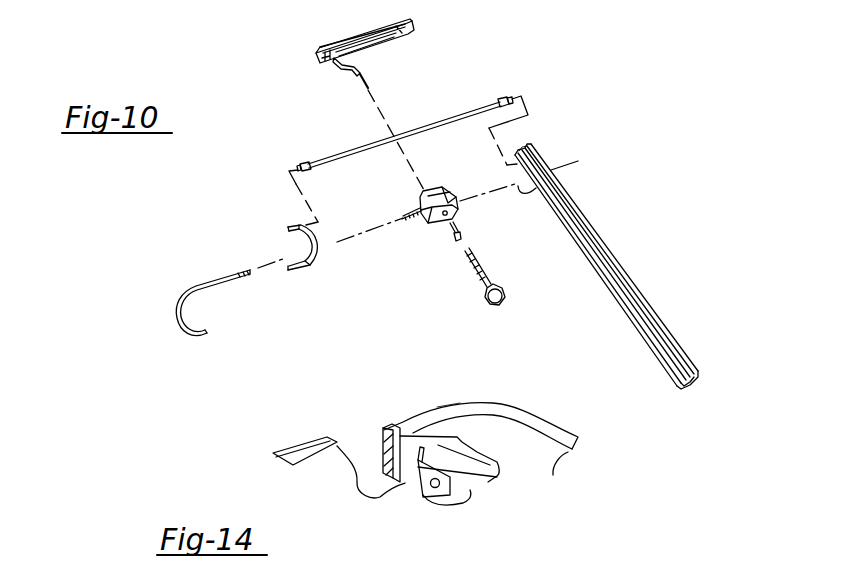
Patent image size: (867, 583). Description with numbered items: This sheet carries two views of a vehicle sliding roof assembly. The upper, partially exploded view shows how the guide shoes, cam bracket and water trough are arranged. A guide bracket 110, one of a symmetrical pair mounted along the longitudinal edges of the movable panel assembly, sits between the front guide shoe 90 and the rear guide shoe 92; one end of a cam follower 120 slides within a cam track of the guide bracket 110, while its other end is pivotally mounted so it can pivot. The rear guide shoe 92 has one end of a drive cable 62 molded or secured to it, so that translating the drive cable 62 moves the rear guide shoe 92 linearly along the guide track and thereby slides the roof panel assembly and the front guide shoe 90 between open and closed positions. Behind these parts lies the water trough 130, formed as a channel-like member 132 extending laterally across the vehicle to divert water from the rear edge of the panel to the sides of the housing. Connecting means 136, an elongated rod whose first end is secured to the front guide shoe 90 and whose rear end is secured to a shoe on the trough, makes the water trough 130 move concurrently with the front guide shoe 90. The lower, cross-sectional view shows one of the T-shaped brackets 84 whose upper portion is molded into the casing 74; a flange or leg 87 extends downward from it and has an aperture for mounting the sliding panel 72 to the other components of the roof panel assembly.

In FIG. 10, the guide bracket 110 is at (352, 35).
In FIG. 10, the cam follower 120 is at (344, 70).
In FIG. 10, the connecting means 136 is at (458, 108).
In FIG. 10, the drive cable 62 is at (193, 288).
In FIG. 10, the front guide shoe 90 is at (312, 270).
In FIG. 10, the rear guide shoe 92 is at (432, 223).
In FIG. 10, the water trough 130 is at (610, 266).
In FIG. 10, the channel-like member 132 is at (632, 303).
In FIG. 14, the sliding panel 72 is at (522, 445).
In FIG. 14, the casing 74 is at (473, 406).
In FIG. 14, the bracket 84 is at (405, 483).
In FIG. 14, the flange or leg 87 is at (453, 503).